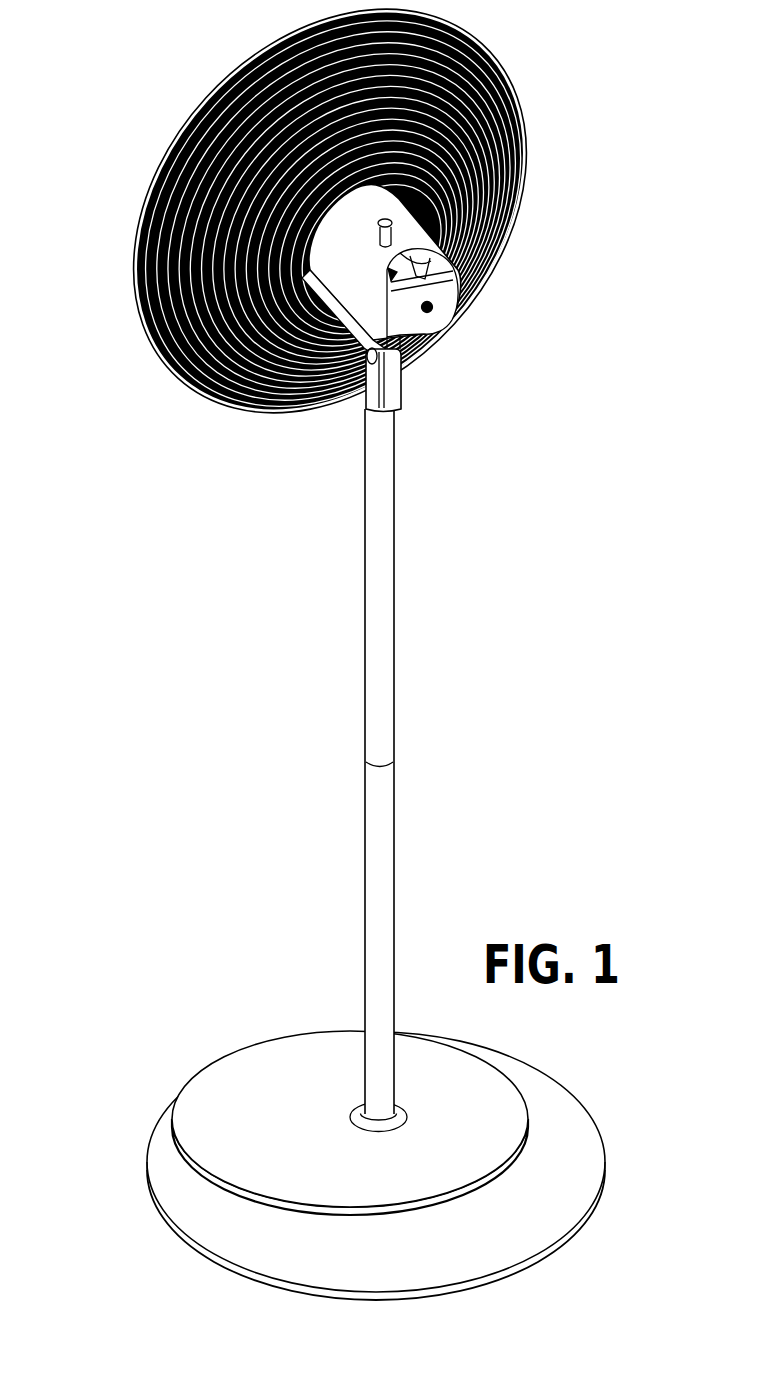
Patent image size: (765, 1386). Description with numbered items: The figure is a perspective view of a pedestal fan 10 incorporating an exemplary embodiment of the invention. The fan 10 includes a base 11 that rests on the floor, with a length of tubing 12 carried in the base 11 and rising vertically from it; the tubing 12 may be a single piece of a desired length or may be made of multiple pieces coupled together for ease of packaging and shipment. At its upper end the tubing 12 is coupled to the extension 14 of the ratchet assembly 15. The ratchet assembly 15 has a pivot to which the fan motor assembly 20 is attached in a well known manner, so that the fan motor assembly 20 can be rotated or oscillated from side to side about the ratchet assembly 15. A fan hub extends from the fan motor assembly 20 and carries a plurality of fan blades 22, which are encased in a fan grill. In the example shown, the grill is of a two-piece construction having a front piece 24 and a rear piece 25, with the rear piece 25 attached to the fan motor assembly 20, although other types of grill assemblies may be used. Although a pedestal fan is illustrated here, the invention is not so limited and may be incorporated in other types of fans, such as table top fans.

The fan 10 is at (498, 651).
The base 11 is at (483, 1073).
The tubing 12 is at (388, 728).
The extension 14 is at (400, 387).
The ratchet assembly 15 is at (330, 245).
The fan motor assembly 20 is at (359, 272).
The fan blades 22 is at (143, 217).
The front piece 24 is at (210, 98).
The rear piece 25 is at (524, 134).